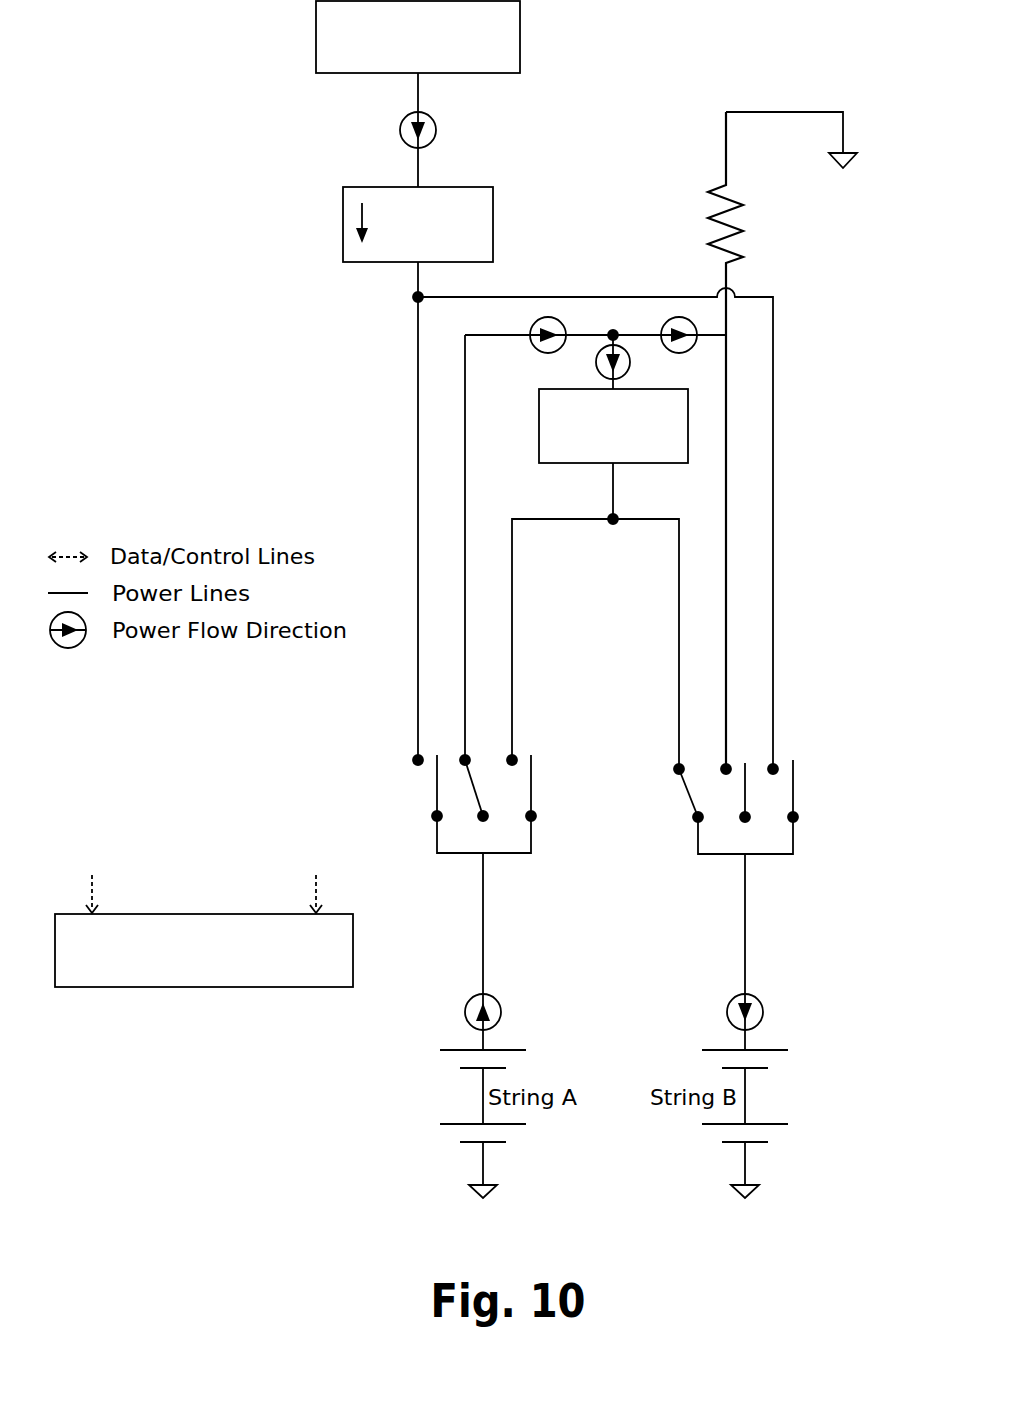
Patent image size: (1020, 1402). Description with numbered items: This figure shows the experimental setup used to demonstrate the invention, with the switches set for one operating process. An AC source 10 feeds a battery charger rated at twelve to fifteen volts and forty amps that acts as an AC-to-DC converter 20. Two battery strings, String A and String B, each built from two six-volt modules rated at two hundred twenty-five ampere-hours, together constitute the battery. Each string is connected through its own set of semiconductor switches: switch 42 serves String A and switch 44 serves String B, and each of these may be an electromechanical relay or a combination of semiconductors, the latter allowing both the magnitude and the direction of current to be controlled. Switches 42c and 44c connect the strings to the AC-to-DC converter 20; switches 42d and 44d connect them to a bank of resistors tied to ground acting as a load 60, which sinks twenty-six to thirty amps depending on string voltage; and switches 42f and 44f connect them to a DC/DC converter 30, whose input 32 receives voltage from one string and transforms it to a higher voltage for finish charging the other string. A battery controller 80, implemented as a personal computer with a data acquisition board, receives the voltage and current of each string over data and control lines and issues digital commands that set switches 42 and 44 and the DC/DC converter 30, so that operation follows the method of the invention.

The AC source 10 is at (418, 37).
The AC-to-DC converter 20 is at (418, 224).
The DC/DC converter 30 is at (278, 1023).
The input of DC/DC converter 32 is at (613, 347).
The load 60 is at (782, 440).
The battery controller 80 is at (207, 901).
The switch 42 is at (341, 908).
The switch 44 is at (509, 911).
The semiconductor switch 42c is at (416, 788).
The semiconductor switch 42d is at (476, 790).
The semiconductor switch 42f is at (547, 788).
The semiconductor switch 44f is at (677, 795).
The semiconductor switch 44d is at (728, 792).
The semiconductor switch 44c is at (809, 807).